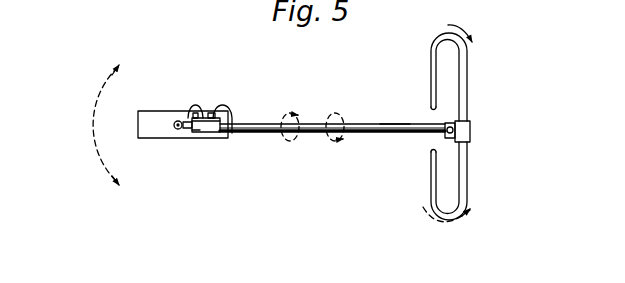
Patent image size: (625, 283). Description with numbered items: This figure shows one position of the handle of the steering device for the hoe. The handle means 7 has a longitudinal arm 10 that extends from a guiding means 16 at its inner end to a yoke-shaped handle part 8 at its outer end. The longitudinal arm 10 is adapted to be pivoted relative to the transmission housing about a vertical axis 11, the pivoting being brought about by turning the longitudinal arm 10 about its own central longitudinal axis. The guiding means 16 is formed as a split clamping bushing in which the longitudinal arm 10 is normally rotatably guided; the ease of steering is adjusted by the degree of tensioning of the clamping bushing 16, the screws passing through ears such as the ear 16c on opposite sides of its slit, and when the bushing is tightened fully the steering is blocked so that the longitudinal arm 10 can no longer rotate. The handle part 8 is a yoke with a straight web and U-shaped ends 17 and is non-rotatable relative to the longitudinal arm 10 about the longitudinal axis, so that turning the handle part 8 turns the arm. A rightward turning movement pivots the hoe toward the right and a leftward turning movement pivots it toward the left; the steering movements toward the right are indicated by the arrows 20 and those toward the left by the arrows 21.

The handle means 7 is at (392, 137).
The handle part 8 is at (470, 163).
The longitudinal arm 10 is at (373, 123).
The vertical axis 11 is at (181, 131).
The guiding means 16 is at (210, 117).
The ear 16c is at (190, 130).
The U-shaped ends 17 is at (312, 278).
The arrows indicating steering movement toward the right 20 is at (102, 89).
The arrows indicating steering movement toward the left 21 is at (100, 156).